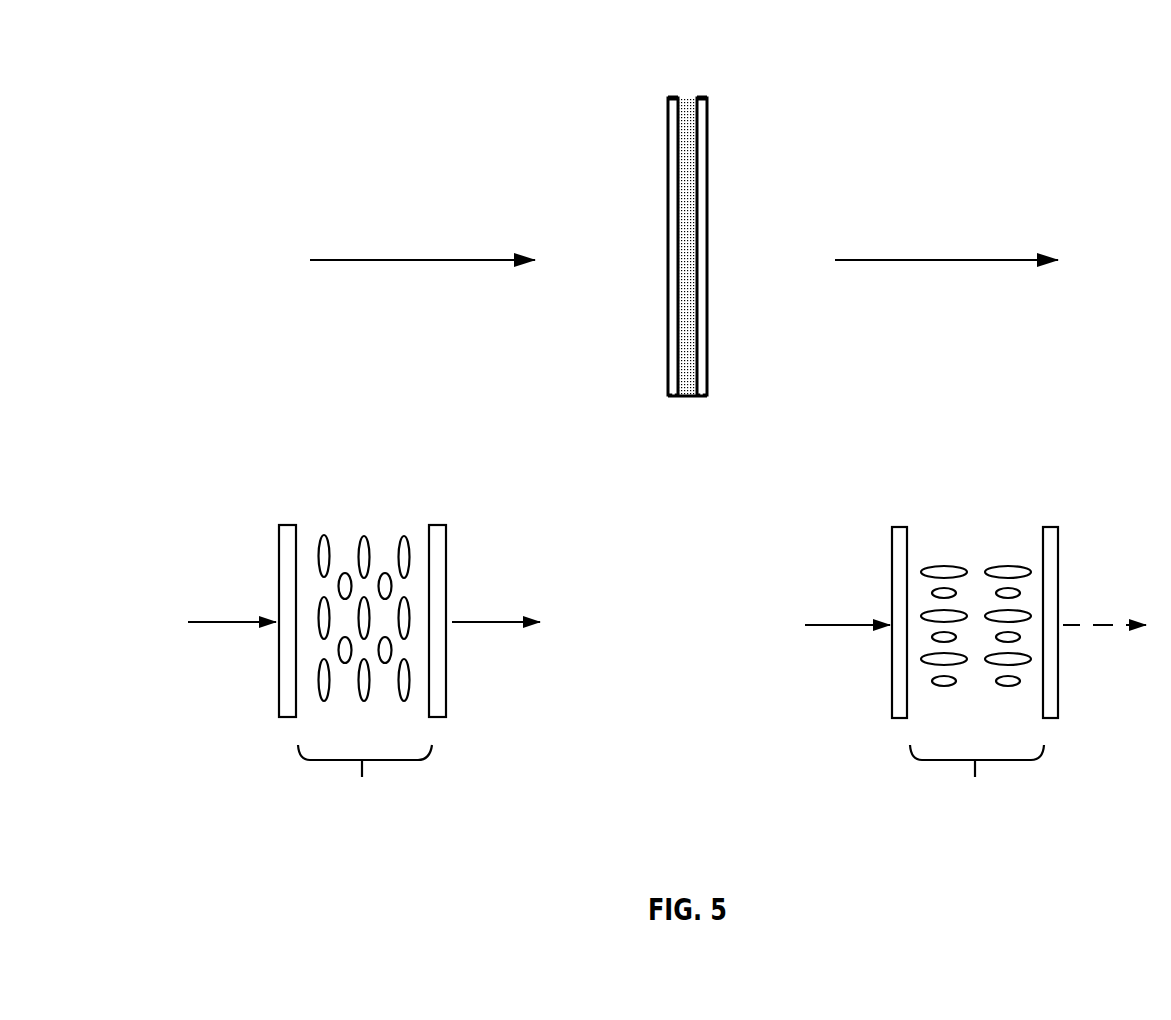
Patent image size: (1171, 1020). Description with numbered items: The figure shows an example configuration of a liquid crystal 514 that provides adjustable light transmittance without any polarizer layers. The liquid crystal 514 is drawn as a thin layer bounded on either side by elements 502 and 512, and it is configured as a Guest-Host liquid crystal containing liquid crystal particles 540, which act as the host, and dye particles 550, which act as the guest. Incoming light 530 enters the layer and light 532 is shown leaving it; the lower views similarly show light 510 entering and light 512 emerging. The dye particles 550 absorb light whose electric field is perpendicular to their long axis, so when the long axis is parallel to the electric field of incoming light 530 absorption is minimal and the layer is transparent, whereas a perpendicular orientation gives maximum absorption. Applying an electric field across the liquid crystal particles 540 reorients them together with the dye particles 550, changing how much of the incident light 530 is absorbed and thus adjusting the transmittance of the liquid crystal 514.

The first substrate 502 is at (668, 97).
The second substrate / output light 512 is at (706, 97).
The liquid crystal 514 is at (686, 97).
The incoming light 530 is at (415, 260).
The transmitted light 532 is at (942, 260).
The incident light 510 is at (838, 625).
The liquid crystal particles 540 is at (1005, 693).
The dye particles 550 is at (352, 480).